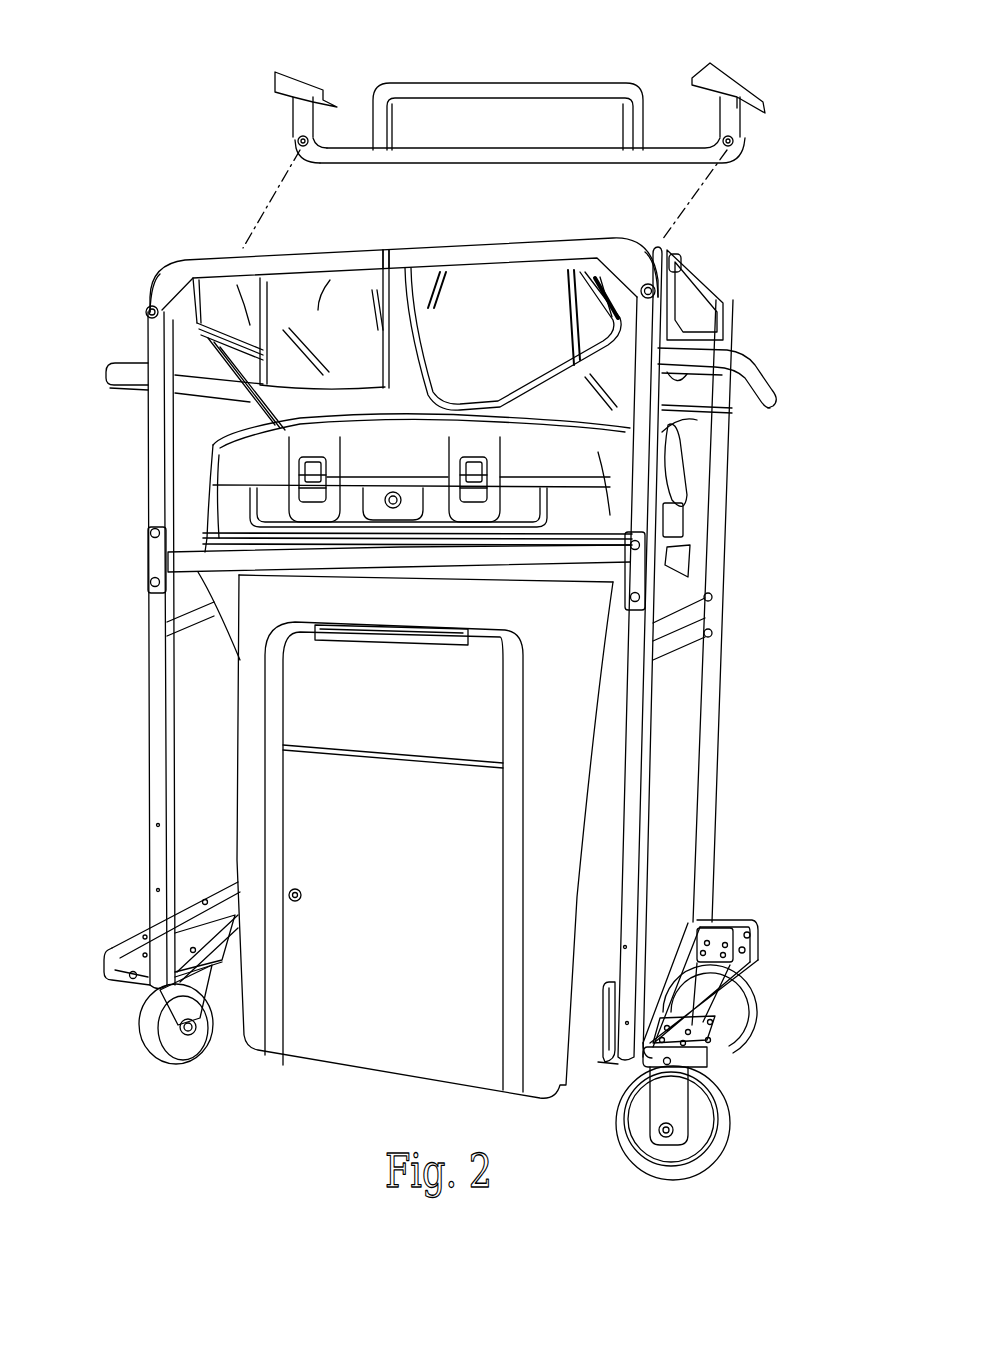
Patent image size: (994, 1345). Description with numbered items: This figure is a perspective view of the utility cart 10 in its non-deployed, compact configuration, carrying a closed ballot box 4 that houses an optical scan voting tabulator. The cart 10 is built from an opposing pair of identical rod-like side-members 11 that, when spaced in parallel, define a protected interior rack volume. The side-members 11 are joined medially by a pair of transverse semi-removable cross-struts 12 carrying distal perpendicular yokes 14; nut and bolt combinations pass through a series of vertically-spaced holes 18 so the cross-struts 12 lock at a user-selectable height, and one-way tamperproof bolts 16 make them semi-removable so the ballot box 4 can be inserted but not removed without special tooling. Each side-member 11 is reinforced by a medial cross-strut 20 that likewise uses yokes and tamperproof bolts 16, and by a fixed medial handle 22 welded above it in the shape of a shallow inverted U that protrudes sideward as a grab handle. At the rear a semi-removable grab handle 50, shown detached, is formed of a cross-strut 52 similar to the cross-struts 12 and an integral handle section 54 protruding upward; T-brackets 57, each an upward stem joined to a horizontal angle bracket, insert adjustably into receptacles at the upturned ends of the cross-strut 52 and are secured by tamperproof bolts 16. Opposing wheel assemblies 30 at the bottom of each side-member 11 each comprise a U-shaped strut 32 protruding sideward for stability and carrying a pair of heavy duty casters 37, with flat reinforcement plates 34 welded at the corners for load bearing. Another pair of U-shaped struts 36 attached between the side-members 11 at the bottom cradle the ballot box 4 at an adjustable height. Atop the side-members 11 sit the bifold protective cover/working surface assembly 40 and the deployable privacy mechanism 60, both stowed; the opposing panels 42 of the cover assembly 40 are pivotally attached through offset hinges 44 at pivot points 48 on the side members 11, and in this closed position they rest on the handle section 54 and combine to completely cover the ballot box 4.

The ballot box 4 is at (393, 831).
The utility cart 10 is at (143, 203).
The side-members 11 is at (141, 626).
The cross-struts 12 is at (222, 640).
The perpendicular yokes 14 is at (150, 535).
The one-way tamperproof bolts 16 is at (298, 140).
The vertically-spaced holes 18 is at (648, 460).
The medial cross-strut 20 is at (156, 648).
The fixed medial handle 22 is at (110, 365).
The wheel assemblies 30 is at (95, 928).
The U-shaped strut 32 is at (217, 893).
The flat reinforcement plates 34 is at (718, 936).
The U-shaped struts 36 is at (600, 1060).
The heavy duty casters 37 is at (145, 1030).
The bifold protective cover/working surface assembly 40 is at (410, 247).
The opposing panels 42 is at (241, 250).
The offset hinges 44 is at (148, 268).
The pivot points 48 is at (147, 310).
The semi-removable grab handle 50 is at (596, 70).
The cross-strut 52 is at (445, 148).
The integral handle section 54 is at (485, 82).
The T-brackets 57 is at (280, 85).
The deployable privacy mechanism 60 is at (318, 303).